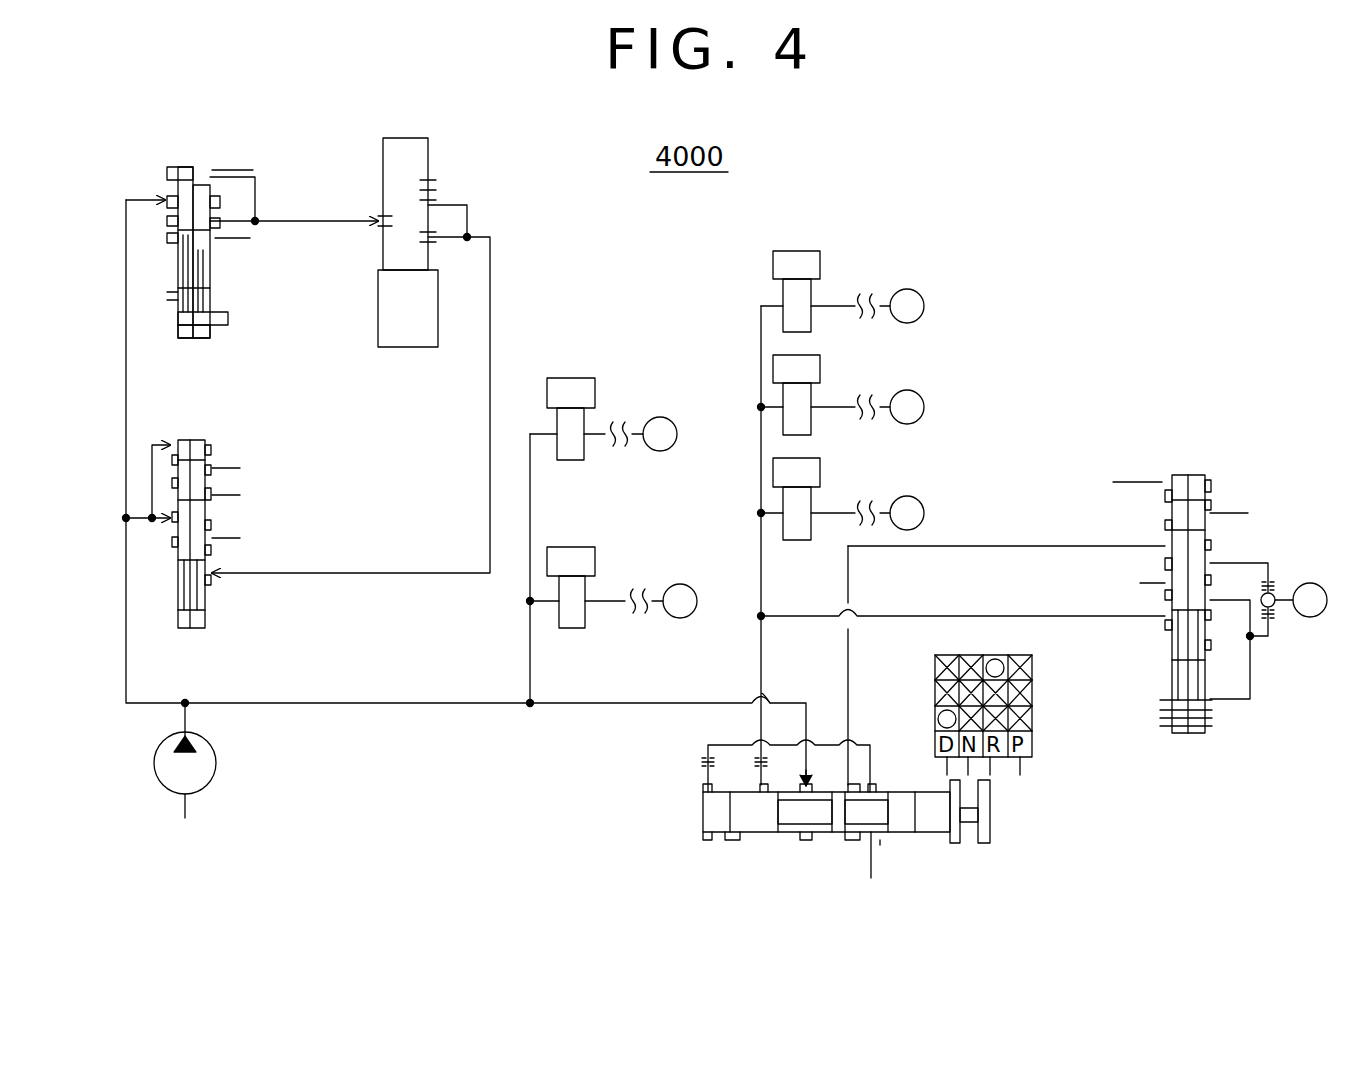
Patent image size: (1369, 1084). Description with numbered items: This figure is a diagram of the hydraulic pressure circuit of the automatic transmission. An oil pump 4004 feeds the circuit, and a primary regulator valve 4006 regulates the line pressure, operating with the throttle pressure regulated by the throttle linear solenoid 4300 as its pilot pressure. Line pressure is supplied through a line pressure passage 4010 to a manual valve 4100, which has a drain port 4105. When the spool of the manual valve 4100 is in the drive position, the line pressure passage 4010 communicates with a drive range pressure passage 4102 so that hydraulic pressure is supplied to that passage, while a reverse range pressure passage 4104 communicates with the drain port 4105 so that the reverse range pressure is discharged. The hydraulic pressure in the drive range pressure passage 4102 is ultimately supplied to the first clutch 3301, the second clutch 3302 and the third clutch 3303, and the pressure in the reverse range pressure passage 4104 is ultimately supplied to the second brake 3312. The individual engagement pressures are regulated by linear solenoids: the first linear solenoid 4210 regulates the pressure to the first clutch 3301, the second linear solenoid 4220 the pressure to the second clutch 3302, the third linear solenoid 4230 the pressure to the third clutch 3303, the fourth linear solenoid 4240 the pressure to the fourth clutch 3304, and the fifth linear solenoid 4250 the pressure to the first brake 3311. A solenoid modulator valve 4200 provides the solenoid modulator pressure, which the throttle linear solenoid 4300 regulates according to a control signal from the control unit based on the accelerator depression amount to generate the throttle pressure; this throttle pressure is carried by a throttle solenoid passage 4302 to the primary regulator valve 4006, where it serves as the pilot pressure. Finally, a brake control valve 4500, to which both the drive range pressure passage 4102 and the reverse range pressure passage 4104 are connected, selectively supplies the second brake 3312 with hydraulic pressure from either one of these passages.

The oil pump 4004 is at (217, 757).
The primary regulator valve 4006 is at (185, 630).
The line pressure passage 4010 is at (252, 685).
The manual valve 4100 is at (690, 822).
The D range pressure passage 4102 is at (1035, 612).
The R range pressure passage 4104 is at (1040, 545).
The drain port 4105 is at (882, 846).
The solenoid modulator valve 4200 is at (192, 348).
The SL1 linear solenoid 4210 is at (848, 262).
The SL2 linear solenoid 4220 is at (848, 366).
The SL3 linear solenoid 4230 is at (848, 470).
The SL4 linear solenoid 4240 is at (573, 378).
The SL5 linear solenoid 4250 is at (573, 547).
The SLT linear solenoid 4300 is at (378, 300).
The SLT passage 4302 is at (445, 575).
The B2 control valve 4500 is at (1218, 490).
The C1 clutch 3301 is at (908, 290).
The C2 clutch 3302 is at (908, 392).
The C3 clutch 3303 is at (908, 497).
The C4 clutch 3304 is at (658, 417).
The B1 brake 3311 is at (678, 584).
The B2 brake 3312 is at (1312, 620).